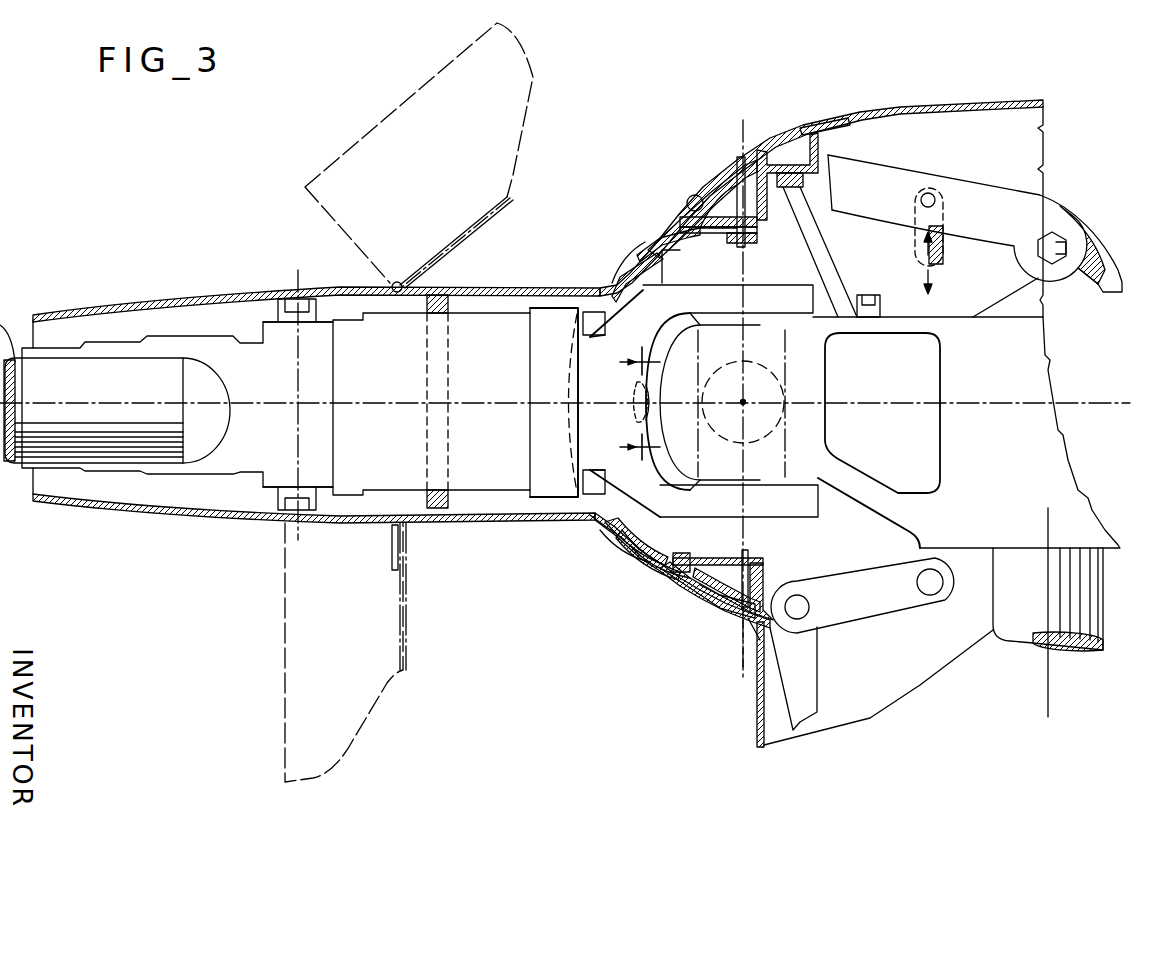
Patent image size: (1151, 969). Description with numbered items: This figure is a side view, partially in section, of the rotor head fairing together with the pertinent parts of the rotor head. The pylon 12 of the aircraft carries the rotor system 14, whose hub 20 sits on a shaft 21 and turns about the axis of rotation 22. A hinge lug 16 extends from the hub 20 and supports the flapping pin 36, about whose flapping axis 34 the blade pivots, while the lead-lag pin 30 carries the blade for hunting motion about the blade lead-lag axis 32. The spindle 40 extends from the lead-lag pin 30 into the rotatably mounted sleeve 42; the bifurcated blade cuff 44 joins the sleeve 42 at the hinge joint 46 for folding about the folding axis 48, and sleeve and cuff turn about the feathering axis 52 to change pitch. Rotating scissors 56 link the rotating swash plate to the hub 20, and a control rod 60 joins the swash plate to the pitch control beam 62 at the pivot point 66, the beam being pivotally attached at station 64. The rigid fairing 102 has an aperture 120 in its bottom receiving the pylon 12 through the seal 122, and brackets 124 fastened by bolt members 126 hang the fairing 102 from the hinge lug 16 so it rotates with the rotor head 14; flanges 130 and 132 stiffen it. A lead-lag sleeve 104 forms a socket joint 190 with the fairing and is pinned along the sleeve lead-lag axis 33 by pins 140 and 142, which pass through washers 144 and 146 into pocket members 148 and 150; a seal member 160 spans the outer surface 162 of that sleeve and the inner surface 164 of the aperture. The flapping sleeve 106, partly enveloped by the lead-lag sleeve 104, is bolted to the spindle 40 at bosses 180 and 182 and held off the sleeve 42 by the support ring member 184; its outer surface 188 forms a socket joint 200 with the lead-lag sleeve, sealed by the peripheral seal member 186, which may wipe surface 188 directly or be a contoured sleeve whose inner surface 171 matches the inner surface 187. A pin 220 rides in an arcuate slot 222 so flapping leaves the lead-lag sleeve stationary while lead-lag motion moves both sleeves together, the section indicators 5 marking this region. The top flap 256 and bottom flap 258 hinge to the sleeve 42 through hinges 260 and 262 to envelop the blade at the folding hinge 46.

The section line 5- 5 is at (631, 403).
The pylon 12 is at (757, 712).
The rotor system 14 is at (876, 526).
The hinge lug 16 is at (825, 385).
The hub 20 is at (1012, 434).
The shaft 21 is at (1025, 622).
The axis of rotation 22 is at (1052, 704).
The lead-lag pin 30 is at (782, 340).
The blade lead-lag axis 32 is at (752, 300).
The sleeve lead-lag axis 33 is at (740, 155).
The flapping axis 34 is at (742, 404).
The flapping pin 36 is at (765, 370).
The spindle 40 is at (813, 283).
The sleeve 42 is at (510, 305).
The bifurcated blade cuff 44 is at (100, 350).
The hinge joint 46 is at (320, 372).
The folding axis 48 is at (300, 448).
The feathering axis 52 is at (356, 405).
The rotating scissors 56 is at (820, 668).
The control rod 60 is at (913, 250).
The pitch control beam 62 is at (928, 193).
The station 64 is at (1095, 258).
The pivot point 66 is at (940, 195).
The rigid fairing 102 is at (962, 106).
The lead-lag sleeve 104 is at (616, 280).
The flapping sleeve 106 is at (612, 300).
The aperture 120 is at (732, 604).
The seal 122 is at (756, 612).
The bracket 124 is at (810, 210).
The bolt member 126 is at (893, 284).
The flange 130 is at (848, 132).
The flange 132 is at (812, 135).
The pin 140 is at (718, 185).
The pin 142 is at (722, 588).
The washer 144 is at (745, 236).
The washer 146 is at (768, 565).
The pocket member 148 is at (738, 246).
The pocket member 150 is at (742, 560).
The seal member 160 is at (702, 195).
The outer surface 162 is at (715, 240).
The inner surface 164 is at (715, 195).
The inner surface 171 is at (606, 288).
The boss 180 is at (556, 322).
The boss 182 is at (592, 522).
The support ring member 184 is at (440, 298).
The peripheral seal member 186 is at (625, 553).
The inner surface 187 is at (605, 537).
The outer surface 188 is at (630, 403).
The socket joint 190 is at (655, 248).
The socket joint 200 is at (652, 562).
The pin 220 is at (640, 398).
The arcuate slot 222 is at (640, 420).
The top flap member 256 is at (505, 218).
The bottom flap member 258 is at (398, 620).
The hinge 260 is at (397, 282).
The hinge 262 is at (392, 540).